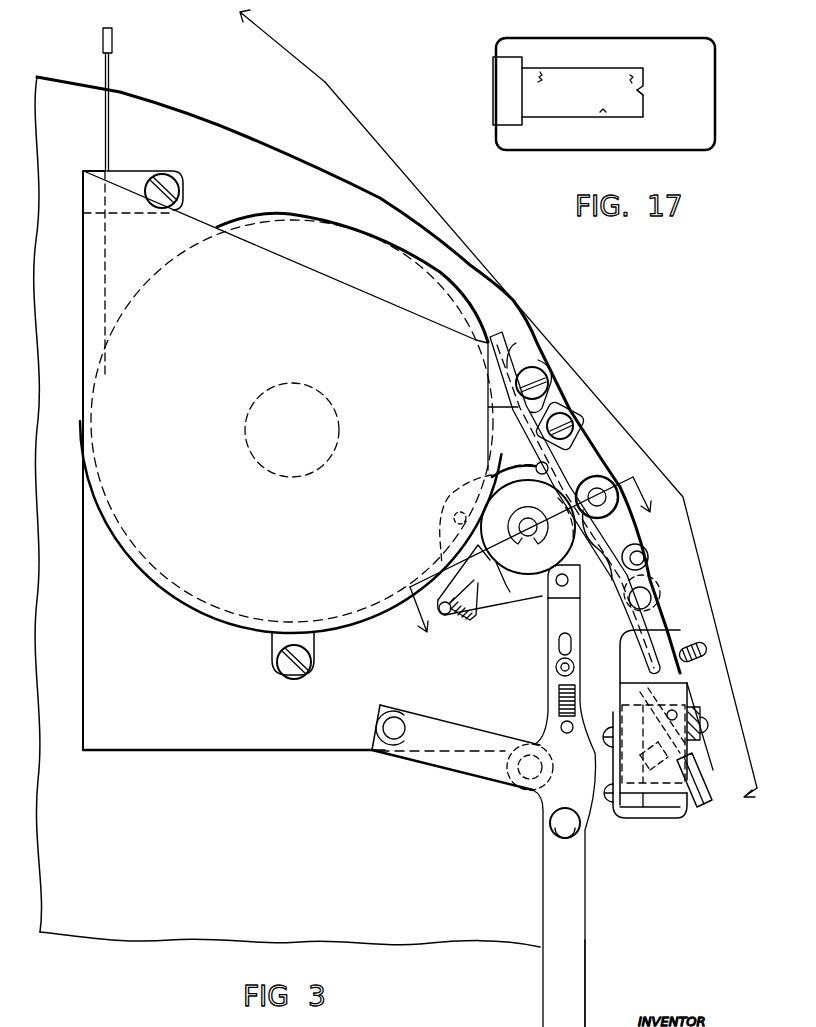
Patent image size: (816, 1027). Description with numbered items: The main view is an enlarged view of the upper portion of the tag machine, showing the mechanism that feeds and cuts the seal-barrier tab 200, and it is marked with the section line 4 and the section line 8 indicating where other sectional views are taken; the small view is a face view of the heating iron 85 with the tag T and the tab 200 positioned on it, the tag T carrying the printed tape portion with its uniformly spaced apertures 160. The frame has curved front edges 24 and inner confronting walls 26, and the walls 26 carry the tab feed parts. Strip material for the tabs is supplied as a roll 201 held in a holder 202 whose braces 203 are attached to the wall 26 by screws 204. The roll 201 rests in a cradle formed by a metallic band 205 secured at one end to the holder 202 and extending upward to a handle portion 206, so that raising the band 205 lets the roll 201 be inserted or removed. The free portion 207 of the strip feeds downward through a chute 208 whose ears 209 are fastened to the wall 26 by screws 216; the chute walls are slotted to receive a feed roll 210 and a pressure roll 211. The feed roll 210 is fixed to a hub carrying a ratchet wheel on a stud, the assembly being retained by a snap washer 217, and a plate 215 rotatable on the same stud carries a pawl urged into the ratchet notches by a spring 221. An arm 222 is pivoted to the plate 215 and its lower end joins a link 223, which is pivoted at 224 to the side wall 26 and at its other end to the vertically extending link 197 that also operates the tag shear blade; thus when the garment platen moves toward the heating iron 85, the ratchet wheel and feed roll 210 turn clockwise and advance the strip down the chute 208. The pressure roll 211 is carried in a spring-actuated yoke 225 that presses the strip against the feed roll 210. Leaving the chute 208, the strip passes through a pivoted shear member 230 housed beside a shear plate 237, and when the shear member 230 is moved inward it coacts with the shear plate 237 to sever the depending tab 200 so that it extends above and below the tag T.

In FIG. 3, the section line 4- 4 is at (490, 411).
In FIG. 3, the section line 8- 8 is at (536, 567).
In FIG. 3, the front edges 24 is at (308, 165).
In FIG. 3, the inner confronting walls 26 is at (352, 264).
In FIG. 17, the heating iron 85 is at (715, 98).
In FIG. 17, the apertures 160 is at (641, 90).
In FIG. 3, the vertically extending link 197 is at (580, 943).
In FIG. 3, the tab 200 is at (705, 808).
In FIG. 17, the tab 200 is at (497, 65).
In FIG. 3, the roll 201 is at (300, 461).
In FIG. 3, the holder 202 is at (290, 426).
In FIG. 3, the braces 203 is at (137, 178).
In FIG. 3, the screws 204 is at (179, 190).
In FIG. 3, the metallic band 205 is at (109, 155).
In FIG. 3, the handle portion 206 is at (112, 42).
In FIG. 3, the free portion of the strip material 207 is at (490, 330).
In FIG. 3, the chute 208 is at (555, 485).
In FIG. 3, the ears 209 is at (540, 400).
In FIG. 3, the feed roll 210 is at (515, 628).
In FIG. 3, the pressure roll 211 is at (630, 462).
In FIG. 3, the plate 215 is at (506, 615).
In FIG. 3, the screws 216 is at (565, 428).
In FIG. 3, the snap washer 217 is at (541, 512).
In FIG. 3, the spring 221 is at (475, 600).
In FIG. 3, the arm 222 is at (552, 635).
In FIG. 3, the link 223 is at (488, 728).
In FIG. 3, the pivot connection 224 is at (378, 725).
In FIG. 3, the yoke 225 is at (649, 565).
In FIG. 3, the shear member 230 is at (703, 770).
In FIG. 3, the shear plate 237 is at (655, 825).
In FIG. 17, the tag T is at (568, 68).